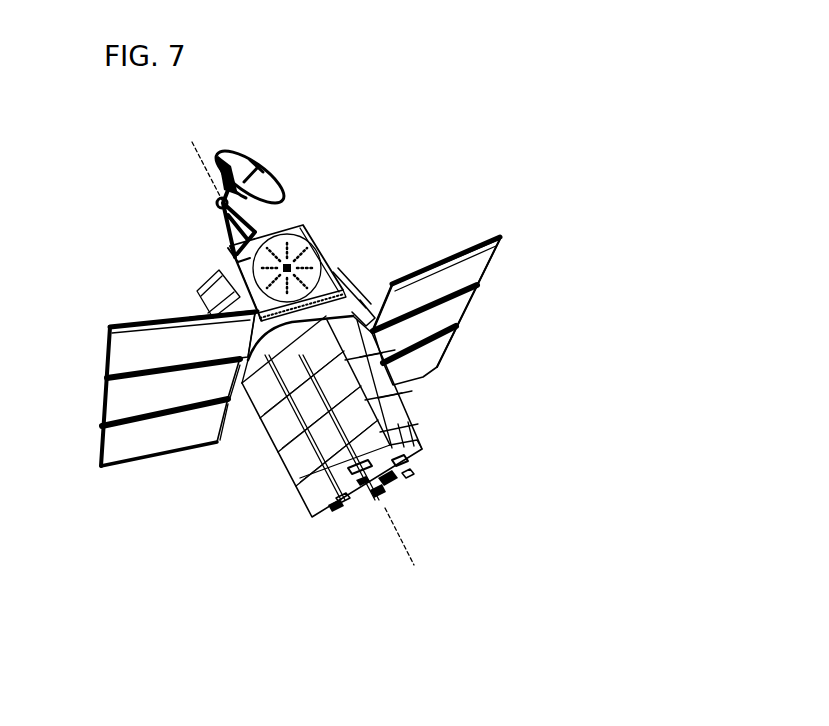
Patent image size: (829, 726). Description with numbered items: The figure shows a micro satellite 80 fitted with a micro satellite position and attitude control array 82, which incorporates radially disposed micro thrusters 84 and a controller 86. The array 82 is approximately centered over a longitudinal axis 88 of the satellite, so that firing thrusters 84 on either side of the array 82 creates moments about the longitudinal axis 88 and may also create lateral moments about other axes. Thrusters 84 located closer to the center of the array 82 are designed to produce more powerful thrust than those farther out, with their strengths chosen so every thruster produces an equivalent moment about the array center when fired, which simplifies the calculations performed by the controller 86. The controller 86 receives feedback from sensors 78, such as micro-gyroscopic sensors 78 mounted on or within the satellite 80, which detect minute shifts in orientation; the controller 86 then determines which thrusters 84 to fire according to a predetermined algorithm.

The sensors 78 is at (318, 320).
The micro satellite 80 is at (339, 184).
The micro satellite position and attitude control array 82 is at (316, 247).
The micro thrusters 84 is at (277, 243).
The controller 86 is at (234, 253).
The longitudinal axis 88 is at (213, 186).